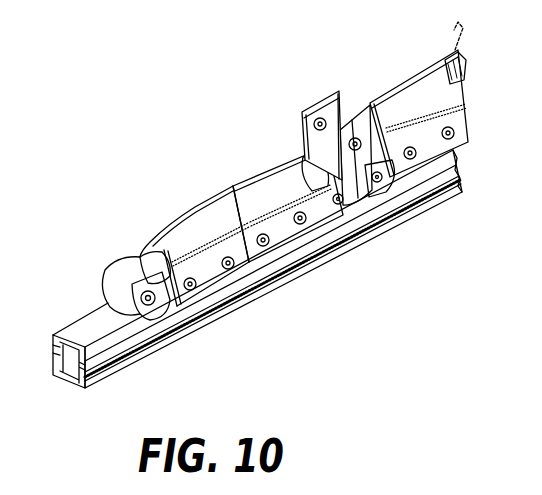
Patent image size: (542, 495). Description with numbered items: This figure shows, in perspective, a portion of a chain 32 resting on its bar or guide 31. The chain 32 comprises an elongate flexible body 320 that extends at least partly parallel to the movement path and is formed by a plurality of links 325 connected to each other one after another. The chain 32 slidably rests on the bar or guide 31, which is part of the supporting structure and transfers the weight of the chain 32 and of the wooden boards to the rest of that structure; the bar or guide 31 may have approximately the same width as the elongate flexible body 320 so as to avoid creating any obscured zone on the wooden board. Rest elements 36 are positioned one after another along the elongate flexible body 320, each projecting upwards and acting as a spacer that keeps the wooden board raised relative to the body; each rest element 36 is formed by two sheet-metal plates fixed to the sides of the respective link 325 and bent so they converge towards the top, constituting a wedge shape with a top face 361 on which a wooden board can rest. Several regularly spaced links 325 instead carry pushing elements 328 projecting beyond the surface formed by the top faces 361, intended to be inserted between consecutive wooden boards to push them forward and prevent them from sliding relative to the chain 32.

The bar or guide 31 is at (193, 312).
The chain 32 is at (482, 78).
The elongate flexible body 320 is at (88, 290).
The link 325 is at (132, 263).
The pushing element 328 is at (318, 124).
The rest element 36 is at (203, 205).
The top face 361 is at (175, 212).